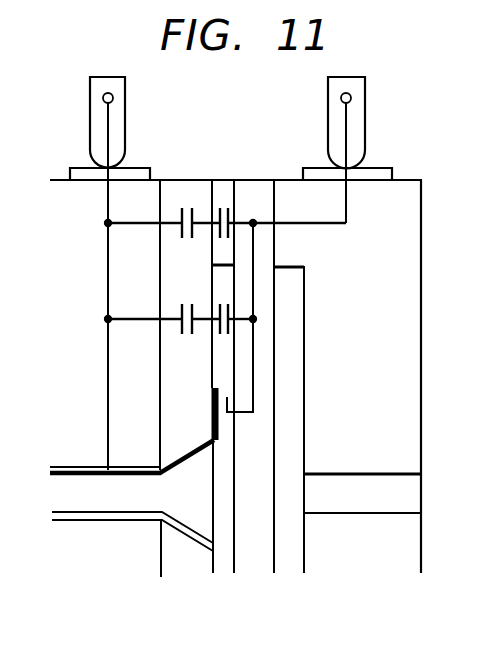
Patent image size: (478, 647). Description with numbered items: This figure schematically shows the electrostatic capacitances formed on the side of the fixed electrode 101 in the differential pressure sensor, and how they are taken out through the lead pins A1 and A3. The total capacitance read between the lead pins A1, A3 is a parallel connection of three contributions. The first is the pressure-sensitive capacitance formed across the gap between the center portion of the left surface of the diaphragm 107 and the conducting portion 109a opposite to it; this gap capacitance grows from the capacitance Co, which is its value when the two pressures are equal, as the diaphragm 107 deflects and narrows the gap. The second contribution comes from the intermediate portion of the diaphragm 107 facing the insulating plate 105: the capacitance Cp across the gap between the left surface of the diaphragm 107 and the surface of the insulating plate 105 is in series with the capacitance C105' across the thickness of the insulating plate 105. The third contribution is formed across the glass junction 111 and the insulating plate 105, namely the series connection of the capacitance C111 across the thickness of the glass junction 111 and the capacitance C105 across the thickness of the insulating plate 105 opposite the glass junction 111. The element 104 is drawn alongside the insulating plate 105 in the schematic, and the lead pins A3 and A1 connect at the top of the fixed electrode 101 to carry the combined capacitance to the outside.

The lead pin A3 is at (103, 99).
The lead pin A1 is at (351, 98).
The fixed electrode 101 is at (405, 242).
The electrode 104 is at (118, 343).
The insulating plate 105 is at (173, 393).
The diaphragm 107 is at (260, 283).
The glass junction 111 is at (227, 187).
The electrostatic capacitance across insulating plate opposite glass junction C105 is at (163, 238).
The electrostatic capacitance across insulating plate C105' is at (163, 333).
The electrostatic capacitance across glass junction C111 is at (222, 210).
The electrostatic capacitance between diaphragm and insulating plate Cp is at (223, 338).
The conducting portion 109a is at (212, 560).
The electrostatic capacitance at zero differential pressure Co is at (227, 420).